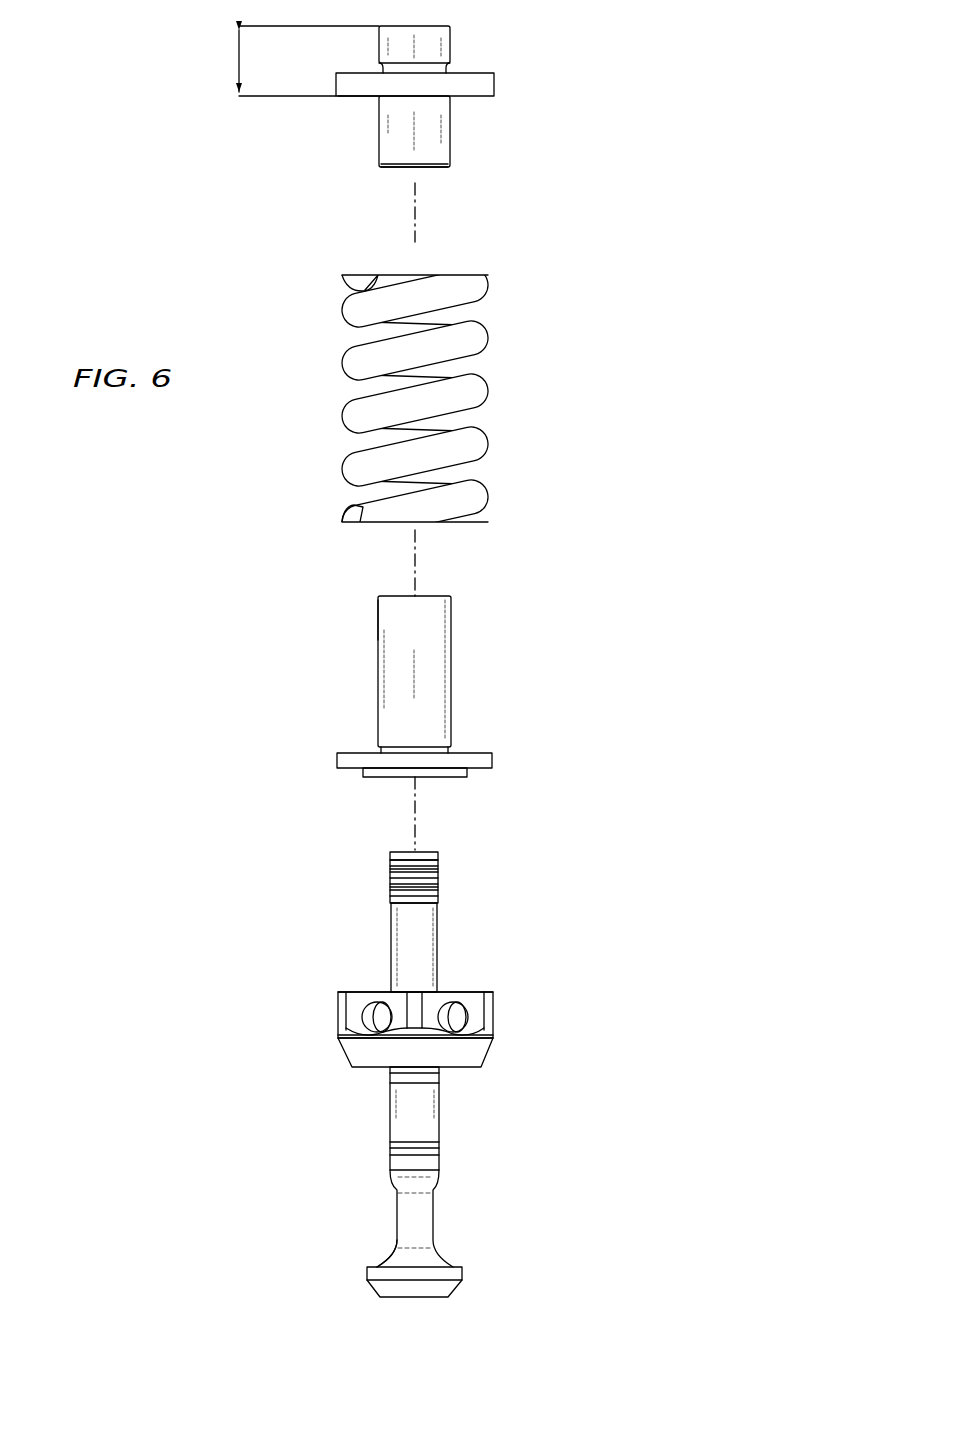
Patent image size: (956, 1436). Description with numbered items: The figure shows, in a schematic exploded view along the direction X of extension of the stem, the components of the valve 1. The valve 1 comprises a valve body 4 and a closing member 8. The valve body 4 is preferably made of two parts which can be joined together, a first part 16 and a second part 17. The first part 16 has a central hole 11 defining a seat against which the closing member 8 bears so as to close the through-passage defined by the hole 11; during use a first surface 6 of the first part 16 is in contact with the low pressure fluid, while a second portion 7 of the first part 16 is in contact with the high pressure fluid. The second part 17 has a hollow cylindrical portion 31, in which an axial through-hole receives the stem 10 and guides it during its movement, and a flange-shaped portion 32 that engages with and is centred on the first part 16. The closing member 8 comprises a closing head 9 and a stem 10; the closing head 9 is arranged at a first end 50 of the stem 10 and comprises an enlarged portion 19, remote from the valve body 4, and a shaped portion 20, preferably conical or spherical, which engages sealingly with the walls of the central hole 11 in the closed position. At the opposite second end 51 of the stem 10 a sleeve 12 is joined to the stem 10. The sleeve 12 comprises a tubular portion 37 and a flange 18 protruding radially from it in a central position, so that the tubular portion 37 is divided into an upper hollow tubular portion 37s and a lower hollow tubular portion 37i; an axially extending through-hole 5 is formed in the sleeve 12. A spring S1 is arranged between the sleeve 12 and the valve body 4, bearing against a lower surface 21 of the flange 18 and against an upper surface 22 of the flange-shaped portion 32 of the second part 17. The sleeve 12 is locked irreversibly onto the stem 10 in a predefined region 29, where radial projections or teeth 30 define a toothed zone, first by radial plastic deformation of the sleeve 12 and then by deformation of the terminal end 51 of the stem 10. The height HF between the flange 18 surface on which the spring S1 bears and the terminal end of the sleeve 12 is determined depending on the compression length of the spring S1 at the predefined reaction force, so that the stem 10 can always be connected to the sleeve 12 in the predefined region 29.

The valve 1 is at (598, 680).
The direction of extension of the stem X is at (418, 573).
The tubular portion 37 is at (449, 113).
The upper hollow tubular portion 37s is at (457, 55).
The flange 18 is at (498, 83).
The lower hollow tubular portion 37i is at (456, 120).
The sleeve 12 is at (456, 150).
The lower surface 21 is at (352, 97).
The through-hole 5 is at (392, 168).
The height HF is at (292, 61).
The spring S1 is at (494, 388).
The second part 17 is at (456, 637).
The hollow cylindrical portion 31 is at (376, 621).
The upper surface 22 is at (344, 752).
The flange-shaped portion 32 is at (477, 771).
The second end 51 is at (388, 853).
The predefined region 29 is at (441, 880).
The radial projections 30 is at (389, 866).
The stem 10 is at (441, 963).
The valve body 4 is at (496, 1012).
The second portion 7 is at (357, 990).
The first part 16 is at (336, 1025).
The first surface 6 is at (458, 1073).
The central hole 11 is at (383, 1073).
The closing member 8 is at (442, 1122).
The first end 50 is at (440, 1232).
The shaped portion 20 is at (384, 1256).
The closing head 9 is at (464, 1285).
The enlarged portion 19 is at (368, 1290).